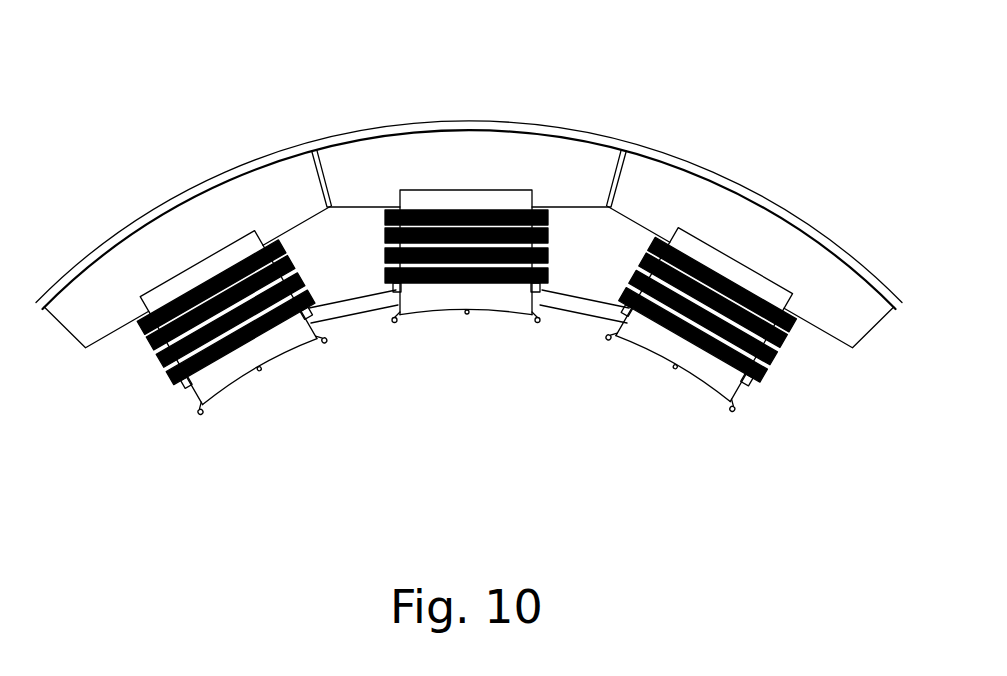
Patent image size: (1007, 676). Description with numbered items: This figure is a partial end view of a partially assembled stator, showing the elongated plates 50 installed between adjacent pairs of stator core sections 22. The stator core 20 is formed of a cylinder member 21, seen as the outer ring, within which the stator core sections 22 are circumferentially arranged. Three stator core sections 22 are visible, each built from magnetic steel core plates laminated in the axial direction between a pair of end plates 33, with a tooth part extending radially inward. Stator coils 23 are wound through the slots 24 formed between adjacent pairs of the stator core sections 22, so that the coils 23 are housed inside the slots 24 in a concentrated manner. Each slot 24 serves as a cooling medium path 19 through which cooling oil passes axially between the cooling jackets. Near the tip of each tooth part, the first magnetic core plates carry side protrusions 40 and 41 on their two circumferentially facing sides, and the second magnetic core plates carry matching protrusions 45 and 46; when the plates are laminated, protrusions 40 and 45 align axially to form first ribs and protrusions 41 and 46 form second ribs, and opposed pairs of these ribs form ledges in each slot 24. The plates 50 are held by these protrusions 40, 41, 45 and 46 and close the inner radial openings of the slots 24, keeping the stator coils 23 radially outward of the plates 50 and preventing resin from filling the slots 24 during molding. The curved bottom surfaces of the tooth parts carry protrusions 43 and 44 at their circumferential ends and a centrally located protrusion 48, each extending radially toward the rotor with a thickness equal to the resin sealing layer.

The cooling medium path 19 is at (620, 240).
The slot 24 is at (715, 280).
The stator core 20 is at (754, 191).
The cylinder member 21 is at (382, 123).
The stator core section 22 is at (497, 143).
The stator coil 23 is at (552, 235).
The end plate 33 is at (442, 200).
The side protrusion 40 is at (322, 216).
The protrusion 45 is at (465, 192).
The side protrusion 41 is at (393, 314).
The protrusion 46 is at (485, 409).
The protrusion 43 is at (396, 322).
The protrusion 44 is at (538, 320).
The protrusion 48 is at (465, 313).
The plate 50 is at (353, 308).